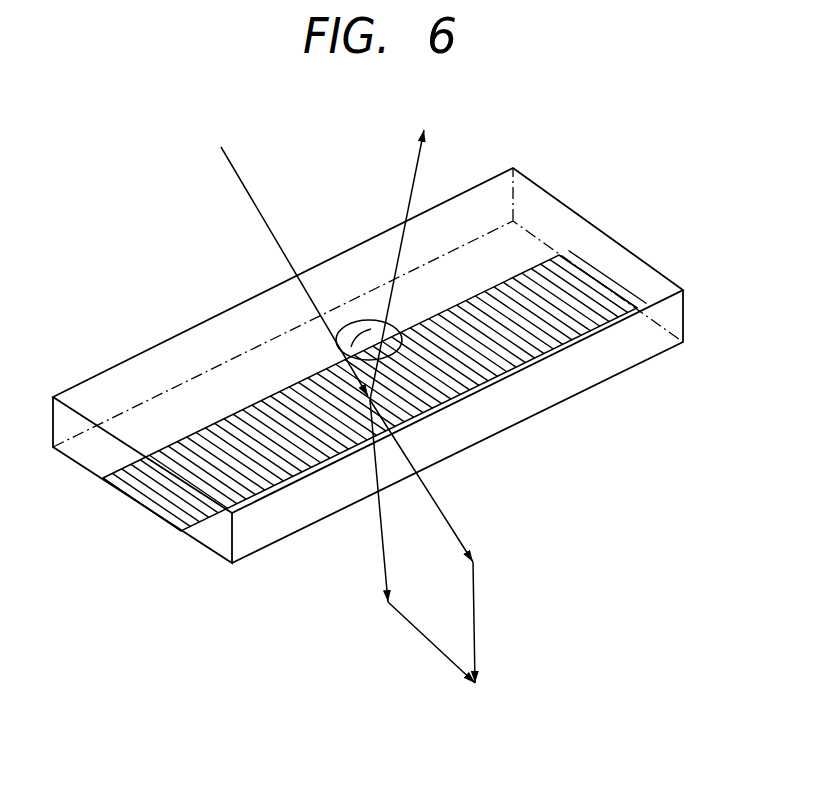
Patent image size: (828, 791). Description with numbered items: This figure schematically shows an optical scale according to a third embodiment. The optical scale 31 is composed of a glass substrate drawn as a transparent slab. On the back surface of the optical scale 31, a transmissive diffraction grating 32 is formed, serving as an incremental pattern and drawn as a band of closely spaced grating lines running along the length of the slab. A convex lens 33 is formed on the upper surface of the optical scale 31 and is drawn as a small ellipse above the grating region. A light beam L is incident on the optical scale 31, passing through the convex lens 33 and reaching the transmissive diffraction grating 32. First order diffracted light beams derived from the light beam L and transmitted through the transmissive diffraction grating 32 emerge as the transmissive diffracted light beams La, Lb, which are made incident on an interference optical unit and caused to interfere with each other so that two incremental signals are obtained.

The optical scale 31 is at (607, 229).
The transmissive diffraction grating 32 is at (150, 500).
The convex lens 33 is at (373, 322).
The light beam L is at (316, 257).
The transmissive diffracted light beam La is at (383, 557).
The transmissive diffracted light beam Lb is at (448, 520).